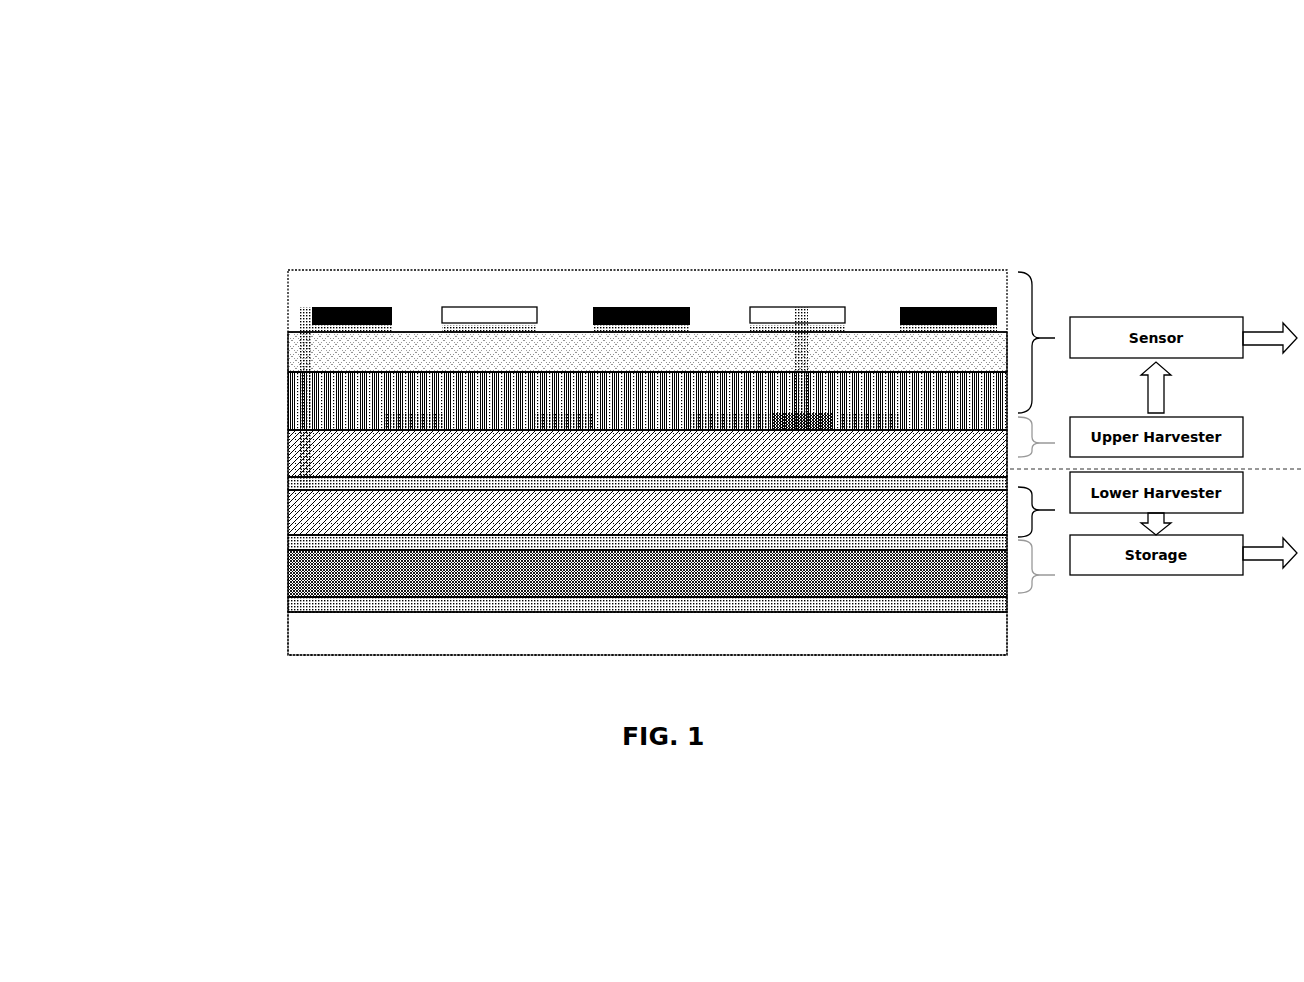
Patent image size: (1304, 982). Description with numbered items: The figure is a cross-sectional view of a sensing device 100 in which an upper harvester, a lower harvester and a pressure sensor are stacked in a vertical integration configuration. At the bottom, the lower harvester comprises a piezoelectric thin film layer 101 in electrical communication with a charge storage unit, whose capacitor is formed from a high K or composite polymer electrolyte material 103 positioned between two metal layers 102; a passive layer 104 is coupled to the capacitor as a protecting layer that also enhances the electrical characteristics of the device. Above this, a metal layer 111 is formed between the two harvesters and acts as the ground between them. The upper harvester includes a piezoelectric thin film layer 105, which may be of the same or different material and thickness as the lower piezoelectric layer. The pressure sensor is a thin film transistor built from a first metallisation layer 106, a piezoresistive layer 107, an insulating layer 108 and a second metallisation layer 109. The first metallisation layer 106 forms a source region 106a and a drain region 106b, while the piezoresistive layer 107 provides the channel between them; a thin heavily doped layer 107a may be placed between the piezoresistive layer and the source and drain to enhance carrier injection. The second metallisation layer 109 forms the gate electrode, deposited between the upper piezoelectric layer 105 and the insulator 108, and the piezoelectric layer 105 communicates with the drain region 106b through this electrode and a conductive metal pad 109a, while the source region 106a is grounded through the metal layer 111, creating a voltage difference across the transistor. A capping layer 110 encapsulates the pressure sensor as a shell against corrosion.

The sensing device 100 is at (1040, 110).
The piezoelectric thin film layer 101 is at (300, 512).
The metal layers 102 is at (293, 602).
The high K/composite polymer electrolyte material 103 is at (360, 580).
The passive layer 104 is at (330, 643).
The piezoelectric thin film layer 105 is at (297, 450).
The first metallisation layer 106 is at (288, 315).
The source region 106a is at (330, 308).
The drain region 106b is at (765, 313).
The piezoresistive layer 107 is at (293, 355).
The heavily doped layer 107a is at (690, 330).
The insulating layer 108 is at (288, 403).
The second metallisation layer 109 is at (540, 415).
The conductive metal pad 109a is at (820, 415).
The capping layer 110 is at (305, 278).
The metal layer 111 is at (288, 480).